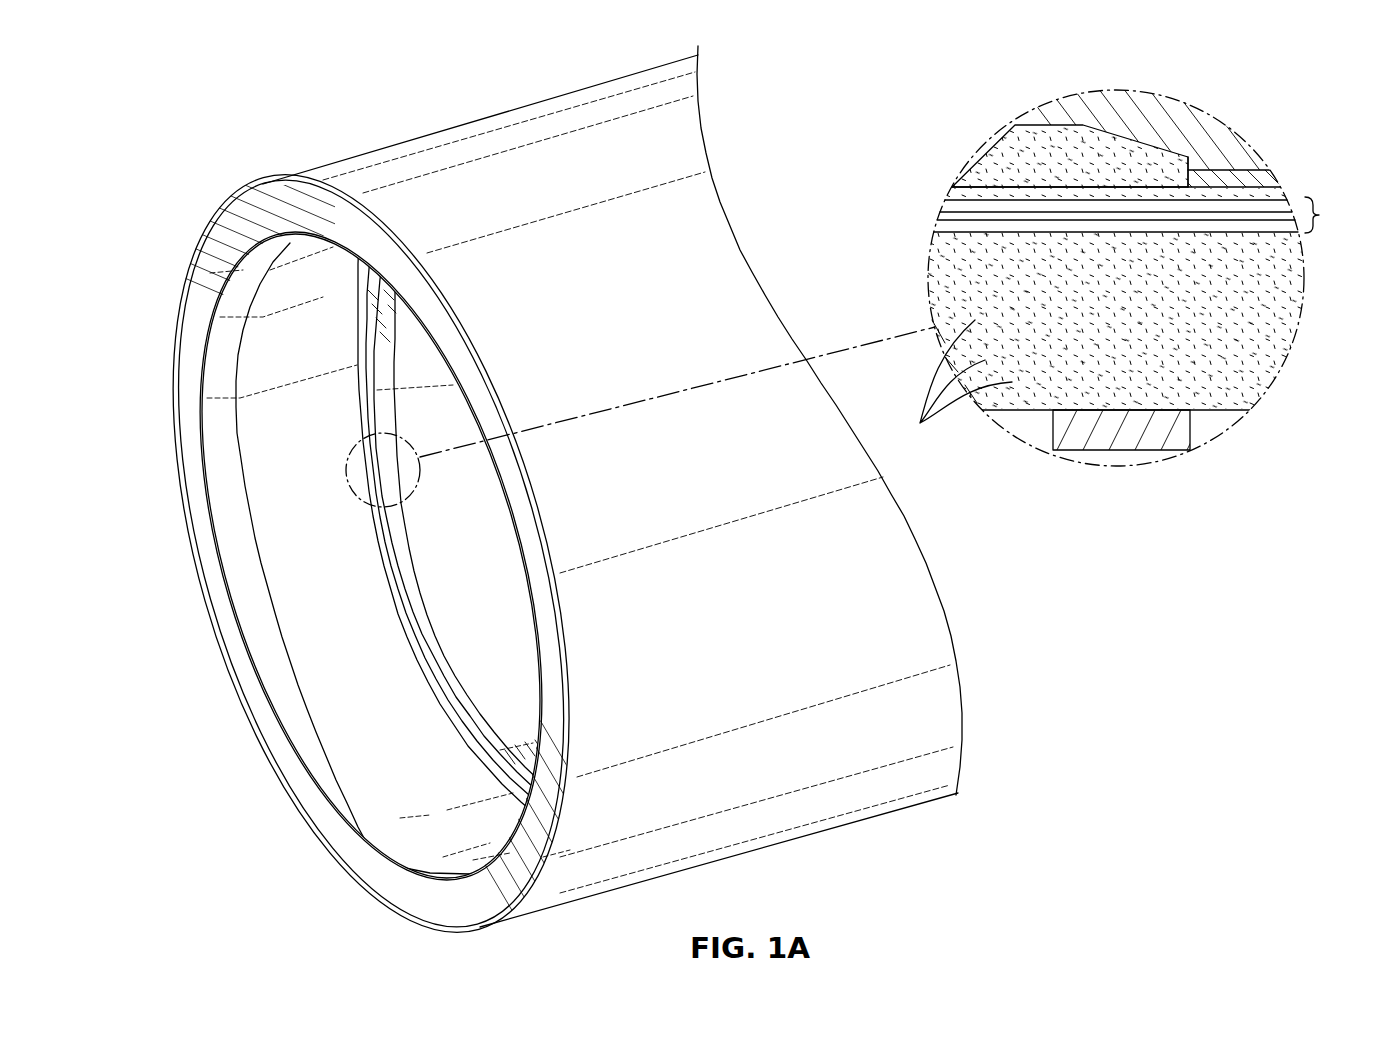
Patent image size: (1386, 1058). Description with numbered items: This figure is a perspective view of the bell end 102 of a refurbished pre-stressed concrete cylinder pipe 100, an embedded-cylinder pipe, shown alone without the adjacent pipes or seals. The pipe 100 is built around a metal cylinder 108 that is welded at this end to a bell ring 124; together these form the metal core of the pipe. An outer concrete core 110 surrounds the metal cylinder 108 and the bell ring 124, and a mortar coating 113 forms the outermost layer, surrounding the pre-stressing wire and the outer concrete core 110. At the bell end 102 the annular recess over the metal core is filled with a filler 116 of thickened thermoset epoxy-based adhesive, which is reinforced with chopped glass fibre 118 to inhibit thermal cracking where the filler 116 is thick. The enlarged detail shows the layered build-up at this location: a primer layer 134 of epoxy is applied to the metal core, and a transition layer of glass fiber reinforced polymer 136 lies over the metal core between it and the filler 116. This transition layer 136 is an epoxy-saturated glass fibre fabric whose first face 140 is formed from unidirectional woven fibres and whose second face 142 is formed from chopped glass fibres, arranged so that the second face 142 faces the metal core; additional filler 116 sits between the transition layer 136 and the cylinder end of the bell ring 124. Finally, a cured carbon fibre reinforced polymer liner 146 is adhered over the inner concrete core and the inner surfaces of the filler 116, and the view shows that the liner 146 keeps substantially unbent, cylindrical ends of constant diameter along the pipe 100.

The pre-stressed concrete cylinder pipe 100 is at (992, 716).
The bell end 102 is at (352, 897).
The metal cylinder 108 is at (1230, 177).
The outer concrete core 110 is at (210, 283).
The mortar coating 113 is at (443, 153).
The filler 116 is at (487, 723).
The chopped glass fibre 118 is at (943, 381).
The bell ring 124 is at (283, 277).
The primer layer 134 is at (1277, 193).
The transition layer of glass fiber reinforced polymer 136 is at (1338, 215).
The first face 140 is at (950, 223).
The second face 142 is at (957, 205).
The CFRP liner 146 is at (407, 347).